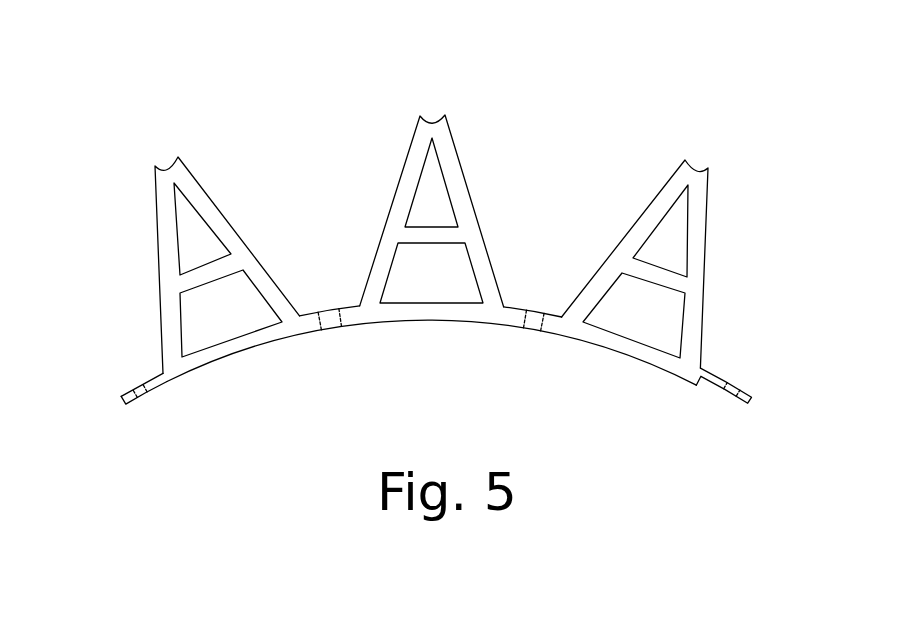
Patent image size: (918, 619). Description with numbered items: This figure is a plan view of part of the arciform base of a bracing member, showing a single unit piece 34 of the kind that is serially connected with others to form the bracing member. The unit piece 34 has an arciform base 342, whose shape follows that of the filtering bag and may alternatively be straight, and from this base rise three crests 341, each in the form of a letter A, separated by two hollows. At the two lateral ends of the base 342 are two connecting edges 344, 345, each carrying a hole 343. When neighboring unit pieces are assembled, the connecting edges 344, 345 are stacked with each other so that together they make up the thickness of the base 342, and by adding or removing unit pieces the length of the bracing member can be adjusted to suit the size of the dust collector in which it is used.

The unit piece 34 is at (445, 244).
The crest 341 is at (178, 172).
The base 342 is at (268, 335).
The hole 343 is at (140, 385).
The connecting edge 344 is at (750, 403).
The connecting edge 345 is at (122, 403).